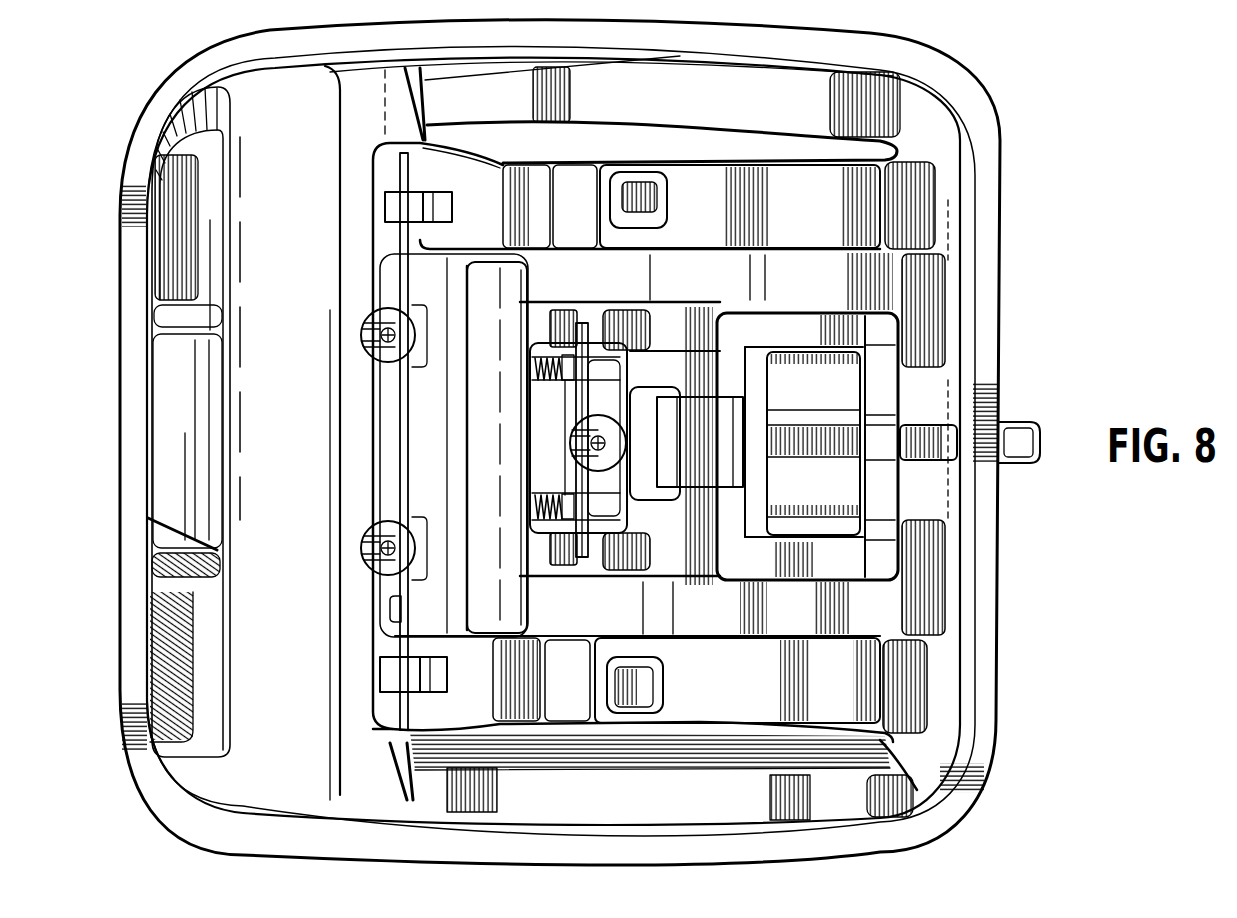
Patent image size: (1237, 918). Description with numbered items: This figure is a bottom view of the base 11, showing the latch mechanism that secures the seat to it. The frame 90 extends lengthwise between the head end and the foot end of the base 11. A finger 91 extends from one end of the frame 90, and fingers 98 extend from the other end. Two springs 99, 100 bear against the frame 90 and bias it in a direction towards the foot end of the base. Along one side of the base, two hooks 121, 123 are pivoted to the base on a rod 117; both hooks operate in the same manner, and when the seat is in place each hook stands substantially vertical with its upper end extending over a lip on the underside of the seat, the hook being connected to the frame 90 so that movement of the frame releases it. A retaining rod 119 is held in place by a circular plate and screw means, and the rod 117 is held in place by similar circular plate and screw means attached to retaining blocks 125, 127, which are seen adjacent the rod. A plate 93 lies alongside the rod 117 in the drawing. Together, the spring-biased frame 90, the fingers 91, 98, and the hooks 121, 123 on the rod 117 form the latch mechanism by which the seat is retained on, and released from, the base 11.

The housing 11 is at (1022, 214).
The frame 90 is at (812, 311).
The finger 91 is at (942, 425).
The slide plate 93 is at (450, 452).
The fingers 98 is at (392, 603).
The spring 99 is at (536, 370).
The spring 100 is at (535, 505).
The rod 117 is at (398, 719).
The retaining rod 119 is at (584, 560).
The hook 121 is at (400, 678).
The hook 123 is at (398, 205).
The retaining block 125 is at (372, 520).
The retaining block 127 is at (372, 312).